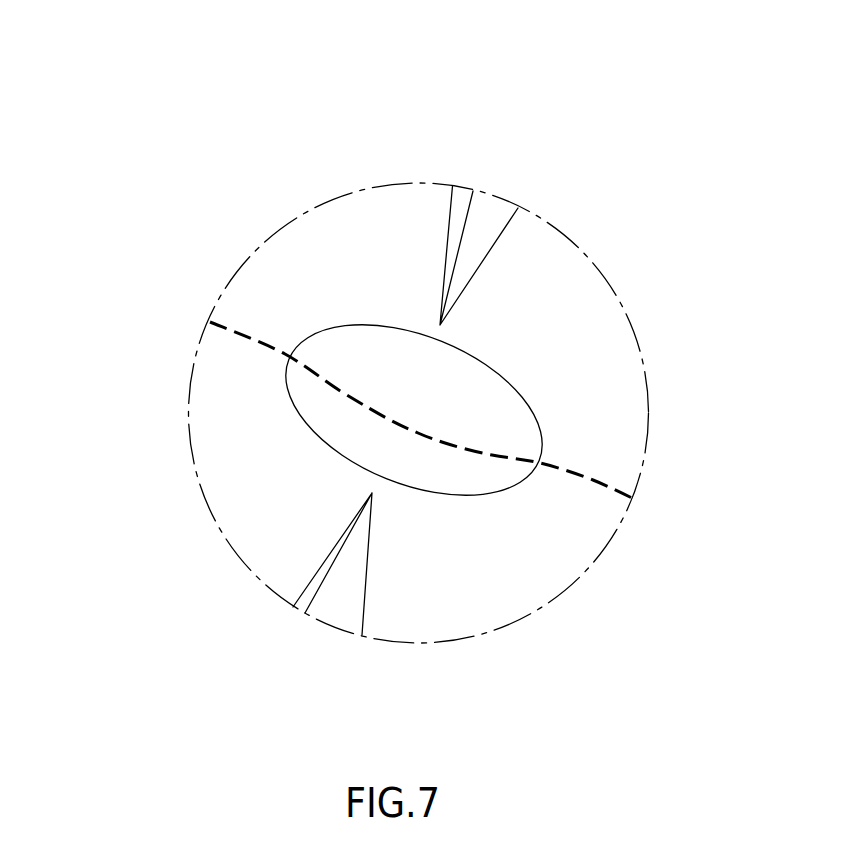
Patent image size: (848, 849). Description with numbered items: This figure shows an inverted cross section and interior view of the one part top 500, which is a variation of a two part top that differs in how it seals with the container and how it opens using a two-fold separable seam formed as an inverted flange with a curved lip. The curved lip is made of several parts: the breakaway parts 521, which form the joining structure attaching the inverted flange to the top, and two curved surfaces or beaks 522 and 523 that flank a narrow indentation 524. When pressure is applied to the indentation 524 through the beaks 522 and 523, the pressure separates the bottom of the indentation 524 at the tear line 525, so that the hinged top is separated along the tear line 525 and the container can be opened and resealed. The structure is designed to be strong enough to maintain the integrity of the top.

The one part top 500 is at (148, 57).
The breakaway parts 521 is at (295, 262).
The curved surface beak 522 is at (453, 220).
The curved surface beak 523 is at (357, 554).
The narrow indentation 524 is at (472, 358).
The tear line 525 is at (605, 483).